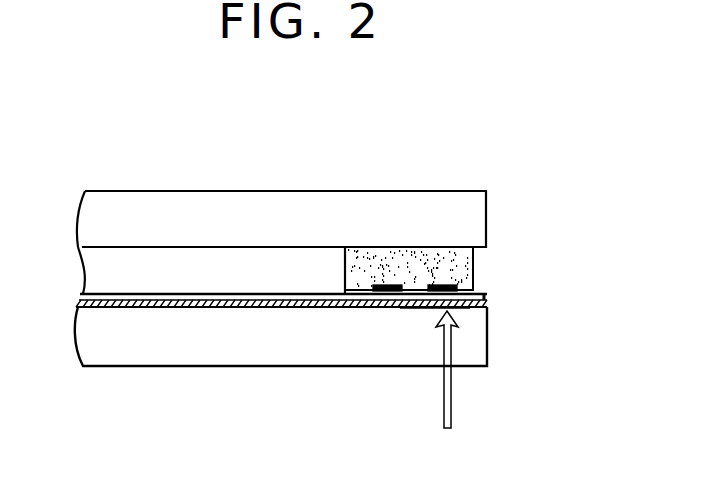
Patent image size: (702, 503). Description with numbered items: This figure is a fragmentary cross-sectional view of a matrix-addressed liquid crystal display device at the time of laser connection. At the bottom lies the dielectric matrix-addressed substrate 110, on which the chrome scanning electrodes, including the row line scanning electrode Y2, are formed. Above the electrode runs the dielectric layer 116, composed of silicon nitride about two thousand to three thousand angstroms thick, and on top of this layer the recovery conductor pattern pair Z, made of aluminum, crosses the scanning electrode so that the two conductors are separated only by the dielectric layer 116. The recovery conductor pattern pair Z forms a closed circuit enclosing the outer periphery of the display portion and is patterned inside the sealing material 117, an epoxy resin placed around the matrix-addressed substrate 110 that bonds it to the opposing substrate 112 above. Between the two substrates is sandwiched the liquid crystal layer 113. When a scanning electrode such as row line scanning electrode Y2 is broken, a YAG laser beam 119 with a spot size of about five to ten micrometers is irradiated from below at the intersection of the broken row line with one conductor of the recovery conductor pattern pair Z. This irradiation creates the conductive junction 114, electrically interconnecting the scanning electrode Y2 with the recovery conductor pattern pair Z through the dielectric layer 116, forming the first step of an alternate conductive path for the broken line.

The matrix-addressed substrate 110 is at (222, 357).
The opposing substrate 112 is at (207, 197).
The liquid crystal layer 113 is at (272, 257).
The conductive junction 114 is at (437, 310).
The dielectric layer 116 is at (481, 292).
The sealing material 117 is at (413, 257).
The YAG laser beam 119 is at (452, 410).
The recovery conductor pattern pair Z is at (443, 281).
The row line scanning electrode Y2 is at (474, 303).